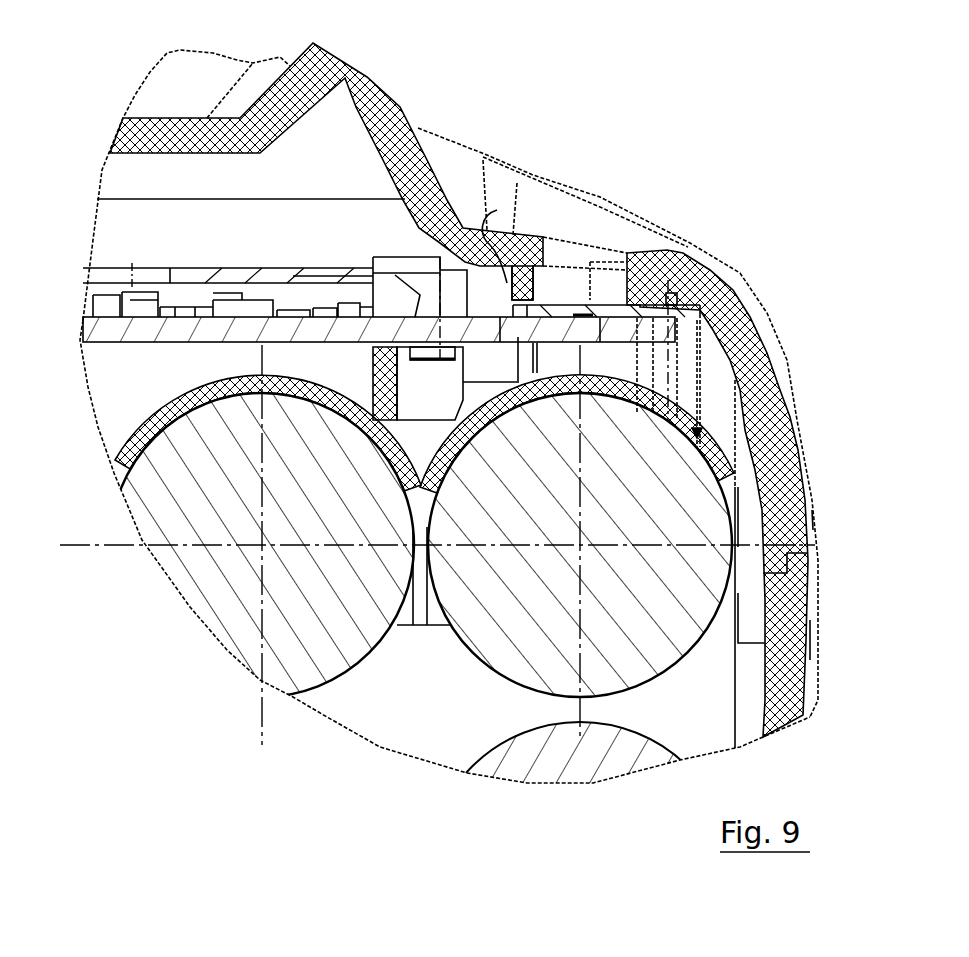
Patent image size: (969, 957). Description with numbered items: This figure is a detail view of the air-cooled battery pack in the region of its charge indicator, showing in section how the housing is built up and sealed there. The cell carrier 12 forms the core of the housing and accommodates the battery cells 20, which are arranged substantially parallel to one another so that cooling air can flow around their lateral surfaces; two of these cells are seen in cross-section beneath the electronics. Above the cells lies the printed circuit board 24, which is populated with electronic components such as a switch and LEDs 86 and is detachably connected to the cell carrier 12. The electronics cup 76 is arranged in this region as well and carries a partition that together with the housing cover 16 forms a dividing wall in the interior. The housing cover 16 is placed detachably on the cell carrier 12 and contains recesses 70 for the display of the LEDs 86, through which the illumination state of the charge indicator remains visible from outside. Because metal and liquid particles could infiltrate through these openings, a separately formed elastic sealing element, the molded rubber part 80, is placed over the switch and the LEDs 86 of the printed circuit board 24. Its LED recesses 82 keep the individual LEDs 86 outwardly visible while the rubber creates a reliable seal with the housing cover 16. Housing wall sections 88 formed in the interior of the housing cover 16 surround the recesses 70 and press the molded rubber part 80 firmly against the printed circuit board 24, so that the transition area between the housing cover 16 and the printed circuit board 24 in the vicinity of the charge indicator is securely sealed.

The cell carrier 12 is at (132, 443).
The housing cover 16 is at (392, 88).
The battery cell 20 is at (225, 613).
The printed circuit board 24 is at (247, 330).
The recess for the display of the LEDs 70 is at (540, 262).
The electronics cup 76 is at (230, 278).
The molded rubber part 80 is at (706, 274).
The LED recess 82 is at (565, 312).
The LEDs 86 is at (585, 262).
The housing wall section 88 is at (513, 293).